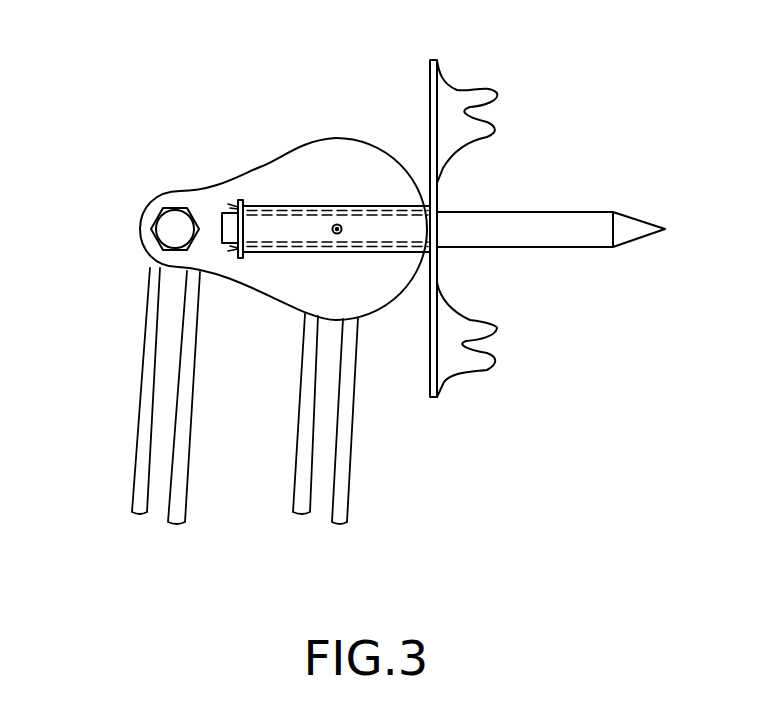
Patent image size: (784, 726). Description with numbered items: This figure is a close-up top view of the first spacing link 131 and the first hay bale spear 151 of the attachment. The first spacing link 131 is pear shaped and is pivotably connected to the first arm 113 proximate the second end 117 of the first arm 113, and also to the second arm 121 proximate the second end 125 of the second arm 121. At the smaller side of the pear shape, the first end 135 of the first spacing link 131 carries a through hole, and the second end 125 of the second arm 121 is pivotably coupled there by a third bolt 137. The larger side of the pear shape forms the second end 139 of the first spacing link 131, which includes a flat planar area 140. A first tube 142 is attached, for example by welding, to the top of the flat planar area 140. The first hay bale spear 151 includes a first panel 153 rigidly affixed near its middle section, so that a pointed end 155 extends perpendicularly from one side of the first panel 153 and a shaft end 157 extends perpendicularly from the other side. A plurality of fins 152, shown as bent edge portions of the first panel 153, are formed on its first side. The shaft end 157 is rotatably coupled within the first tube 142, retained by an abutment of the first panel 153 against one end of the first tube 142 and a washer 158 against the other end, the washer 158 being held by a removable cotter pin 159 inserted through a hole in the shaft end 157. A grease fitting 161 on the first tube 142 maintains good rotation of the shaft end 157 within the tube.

The first arm 113 is at (330, 500).
The second end of the first arm 117 is at (297, 446).
The second arm 121 is at (160, 500).
The second end of the second arm 125 is at (185, 353).
The first spacing link 131 is at (302, 165).
The first end of the first spacing link 135 is at (140, 226).
The third bolt 137 is at (170, 227).
The second end of the first spacing link 139 is at (336, 231).
The flat planar area 140 is at (362, 184).
The first tube 142 is at (218, 236).
The first hay bale spear 151 is at (550, 215).
The fins 152 is at (460, 92).
The first panel 153 is at (438, 194).
The pointed end 155 is at (638, 218).
The shaft end 157 is at (231, 228).
The washer 158 is at (240, 204).
The cotter pin 159 is at (238, 207).
The grease fitting 161 is at (340, 234).